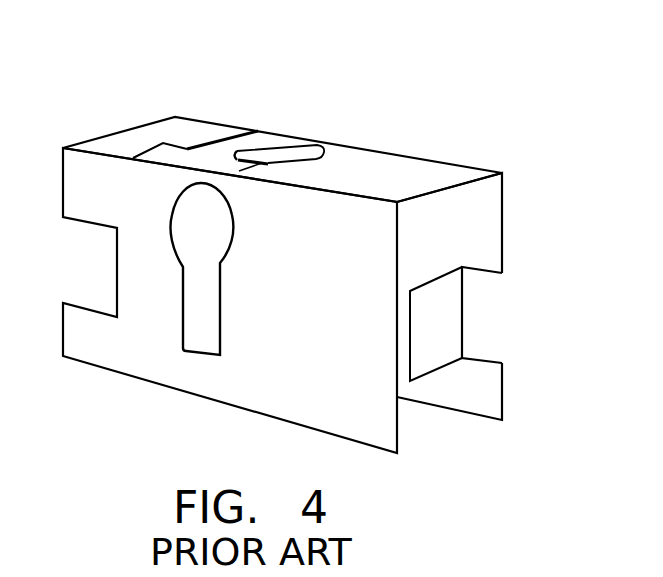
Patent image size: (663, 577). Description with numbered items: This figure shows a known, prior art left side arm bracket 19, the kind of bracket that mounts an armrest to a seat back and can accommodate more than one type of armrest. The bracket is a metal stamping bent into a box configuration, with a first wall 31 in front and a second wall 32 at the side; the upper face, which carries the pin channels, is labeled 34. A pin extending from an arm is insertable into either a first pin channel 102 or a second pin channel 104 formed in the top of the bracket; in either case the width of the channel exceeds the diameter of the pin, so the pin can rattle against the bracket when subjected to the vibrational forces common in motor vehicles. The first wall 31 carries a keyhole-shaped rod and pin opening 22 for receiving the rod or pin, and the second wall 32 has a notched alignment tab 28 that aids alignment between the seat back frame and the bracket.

The arm bracket 19 is at (172, 68).
The rod and pin opening 22 is at (200, 292).
The alignment tab 28 is at (452, 338).
The first wall 31 is at (230, 300).
The second wall 32 is at (449, 296).
The top wall 34 is at (375, 160).
The first pin channel 102 is at (237, 173).
The second pin channel 104 is at (263, 136).